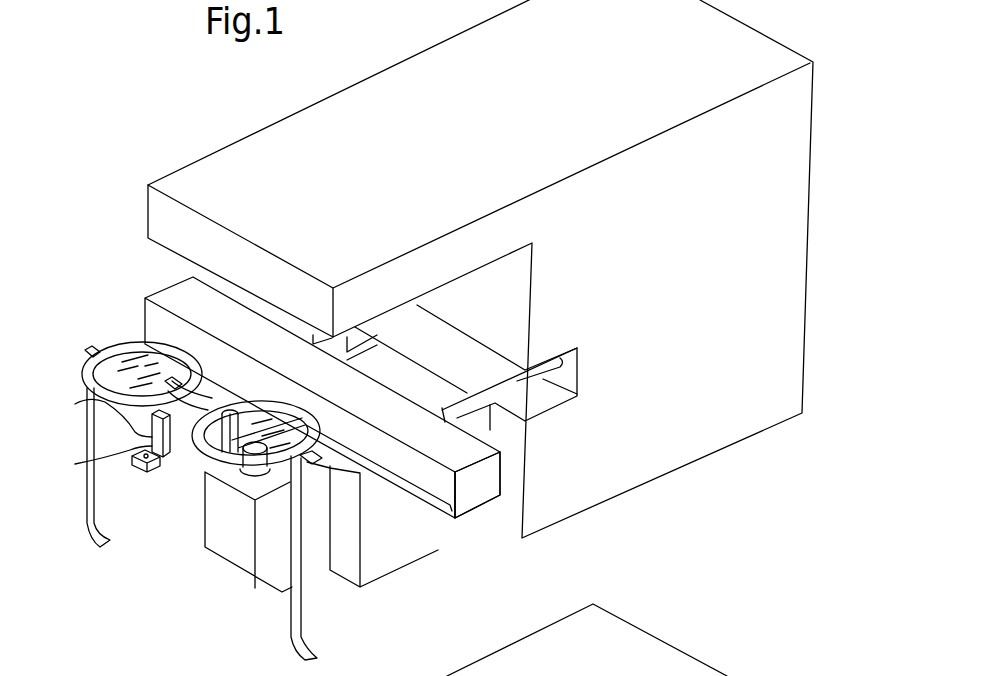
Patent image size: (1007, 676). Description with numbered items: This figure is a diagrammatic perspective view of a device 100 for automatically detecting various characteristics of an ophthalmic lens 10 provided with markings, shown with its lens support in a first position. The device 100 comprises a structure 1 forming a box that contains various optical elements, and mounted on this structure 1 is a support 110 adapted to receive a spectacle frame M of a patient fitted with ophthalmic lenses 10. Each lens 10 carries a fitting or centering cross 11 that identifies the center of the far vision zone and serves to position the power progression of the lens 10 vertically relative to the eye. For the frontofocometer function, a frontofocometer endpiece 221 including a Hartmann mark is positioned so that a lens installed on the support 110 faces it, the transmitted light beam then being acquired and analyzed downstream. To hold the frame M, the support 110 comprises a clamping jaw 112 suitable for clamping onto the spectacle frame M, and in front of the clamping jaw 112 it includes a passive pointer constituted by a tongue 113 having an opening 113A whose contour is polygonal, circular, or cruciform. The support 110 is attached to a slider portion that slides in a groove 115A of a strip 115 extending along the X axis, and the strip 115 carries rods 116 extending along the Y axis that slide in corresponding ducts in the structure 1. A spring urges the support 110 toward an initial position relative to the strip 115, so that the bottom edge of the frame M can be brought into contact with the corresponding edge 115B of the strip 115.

The structure 1 is at (541, 269).
The device 100 is at (825, 294).
The ophthalmic lens 10 is at (372, 444).
The fitting cross 11 is at (212, 392).
The spectacle frame M is at (218, 491).
The support 110 is at (221, 520).
The frontofocometer endpiece 221 is at (240, 476).
The clamping jaw 112 is at (96, 403).
The tongue 113 is at (154, 472).
The opening 113A is at (128, 461).
The strip 115 is at (472, 507).
The groove 115A is at (428, 506).
The edge 115B is at (455, 491).
The rods 116 is at (520, 381).